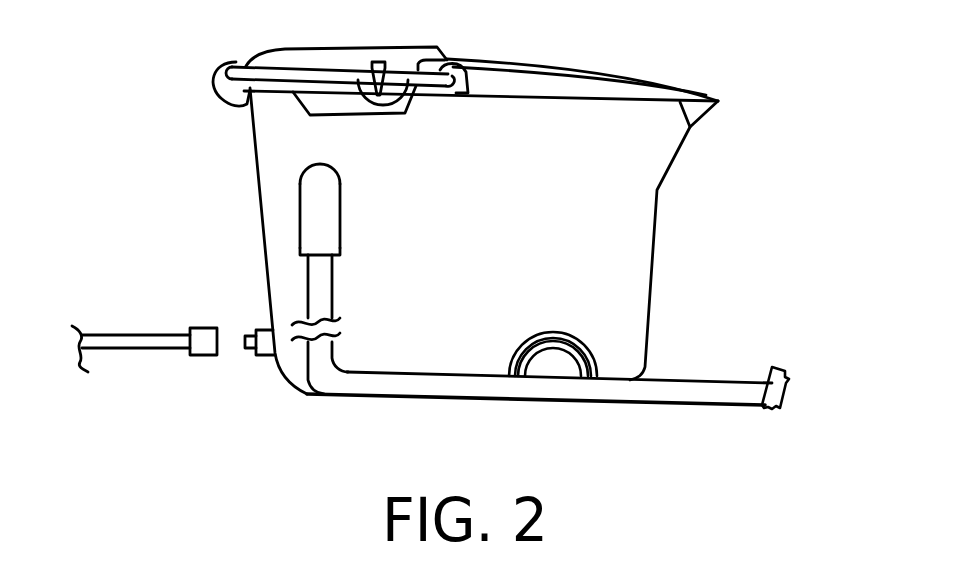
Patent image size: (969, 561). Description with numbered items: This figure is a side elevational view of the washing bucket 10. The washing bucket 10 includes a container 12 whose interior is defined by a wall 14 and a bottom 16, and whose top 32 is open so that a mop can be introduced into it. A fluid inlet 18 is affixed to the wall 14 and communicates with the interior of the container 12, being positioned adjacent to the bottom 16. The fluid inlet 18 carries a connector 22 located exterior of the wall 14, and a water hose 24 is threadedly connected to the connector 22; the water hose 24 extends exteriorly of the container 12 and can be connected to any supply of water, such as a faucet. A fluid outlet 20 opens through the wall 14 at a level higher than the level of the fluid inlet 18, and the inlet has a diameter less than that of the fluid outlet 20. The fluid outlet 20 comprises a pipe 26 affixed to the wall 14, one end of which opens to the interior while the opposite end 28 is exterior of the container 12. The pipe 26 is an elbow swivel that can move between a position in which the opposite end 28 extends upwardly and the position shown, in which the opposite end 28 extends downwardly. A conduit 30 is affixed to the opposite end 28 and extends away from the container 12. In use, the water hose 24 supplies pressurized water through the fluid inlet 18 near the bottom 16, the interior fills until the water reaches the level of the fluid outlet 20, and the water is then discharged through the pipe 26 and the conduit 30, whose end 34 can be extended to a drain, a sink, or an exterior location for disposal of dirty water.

The washing bucket 10 is at (742, 64).
The container 12 is at (633, 243).
The wall 14 is at (481, 252).
The bottom 16 is at (302, 395).
The fluid inlet 18 is at (267, 322).
The fluid outlet 20 is at (340, 178).
The connector 22 is at (247, 357).
The water hose 24 is at (140, 350).
The pipe 26 is at (333, 228).
The opposite end 28 is at (340, 255).
The conduit 30 is at (333, 303).
The top 32 is at (555, 62).
The end 34 is at (793, 382).